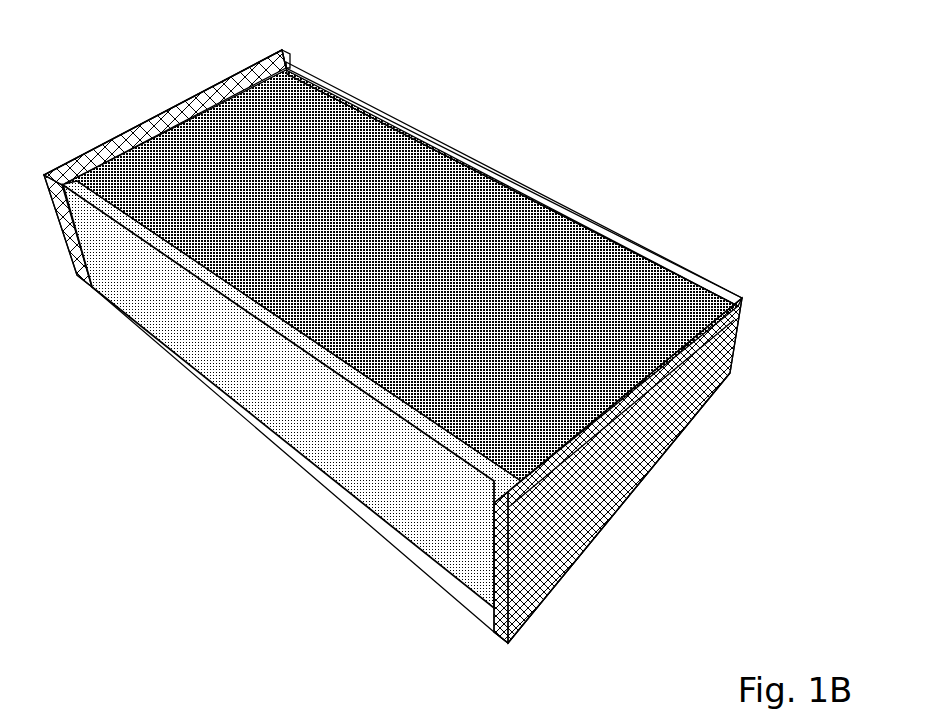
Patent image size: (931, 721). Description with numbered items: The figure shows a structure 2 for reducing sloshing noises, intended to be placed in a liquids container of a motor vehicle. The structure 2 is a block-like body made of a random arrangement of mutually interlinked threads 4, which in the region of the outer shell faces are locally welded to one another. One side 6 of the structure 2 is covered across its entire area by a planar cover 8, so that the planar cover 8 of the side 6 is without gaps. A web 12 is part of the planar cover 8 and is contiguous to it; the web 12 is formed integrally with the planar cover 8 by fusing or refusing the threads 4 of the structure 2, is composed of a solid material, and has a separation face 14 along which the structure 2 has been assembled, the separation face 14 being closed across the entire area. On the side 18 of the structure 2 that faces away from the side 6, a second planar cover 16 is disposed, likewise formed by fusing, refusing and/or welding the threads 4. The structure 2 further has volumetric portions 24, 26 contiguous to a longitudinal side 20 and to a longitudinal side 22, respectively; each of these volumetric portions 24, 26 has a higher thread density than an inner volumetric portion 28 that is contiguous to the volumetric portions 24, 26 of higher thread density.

The structure 2 is at (677, 165).
The mutually interlinked threads 4 is at (548, 218).
The side 6 is at (665, 462).
The planar cover 8 is at (622, 413).
The web 12 is at (292, 56).
The separation face 14 is at (518, 625).
The second planar cover 16 is at (118, 133).
The side 18 is at (140, 95).
The longitudinal side 20 is at (265, 395).
The longitudinal side 22 is at (493, 167).
The volumetric portion 24 is at (191, 352).
The volumetric portion 26 is at (380, 127).
The inner volumetric portion 28 is at (347, 110).